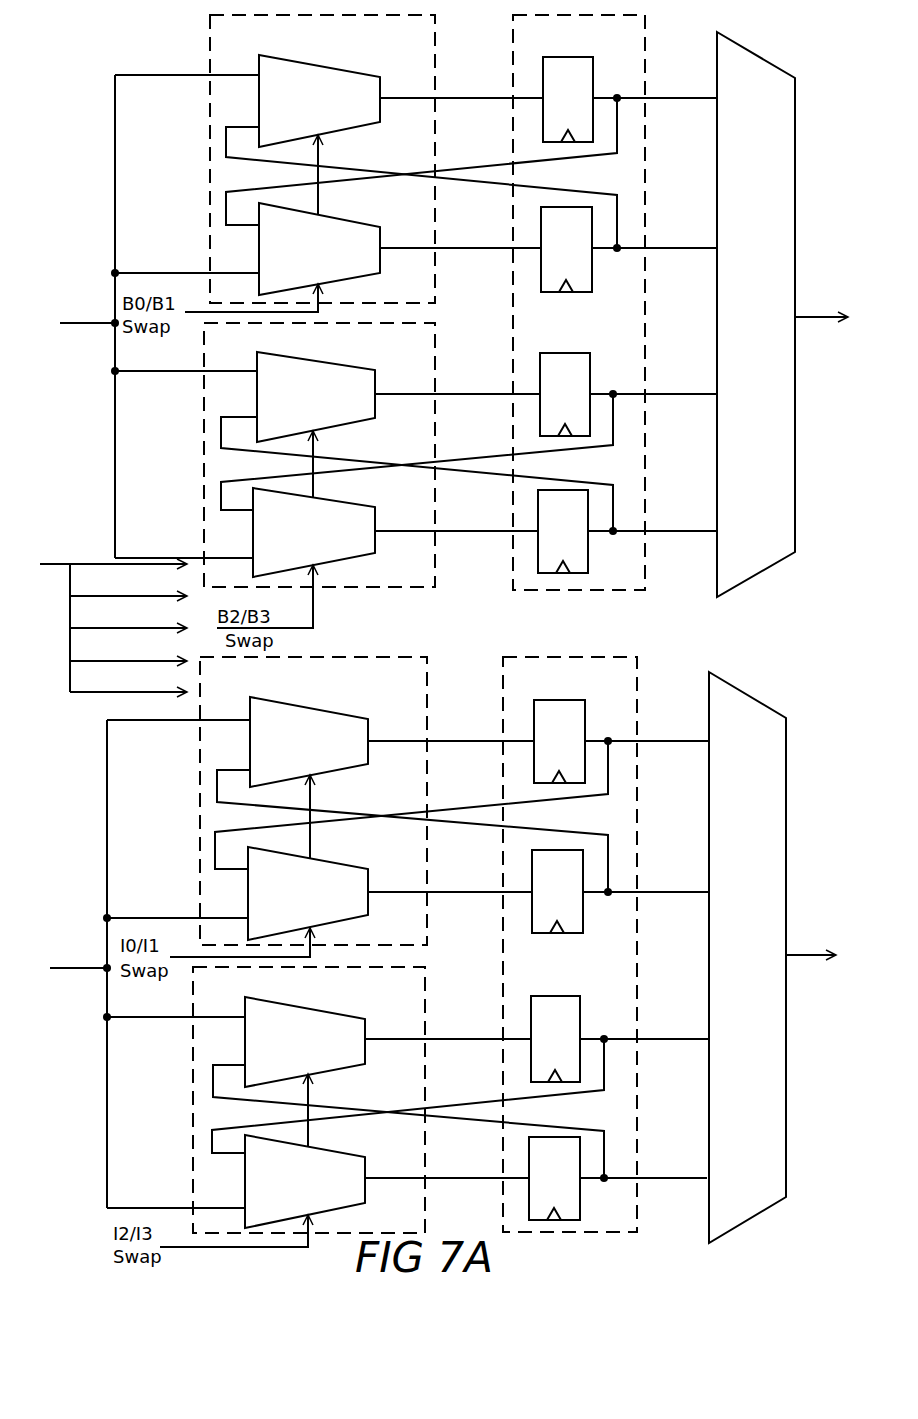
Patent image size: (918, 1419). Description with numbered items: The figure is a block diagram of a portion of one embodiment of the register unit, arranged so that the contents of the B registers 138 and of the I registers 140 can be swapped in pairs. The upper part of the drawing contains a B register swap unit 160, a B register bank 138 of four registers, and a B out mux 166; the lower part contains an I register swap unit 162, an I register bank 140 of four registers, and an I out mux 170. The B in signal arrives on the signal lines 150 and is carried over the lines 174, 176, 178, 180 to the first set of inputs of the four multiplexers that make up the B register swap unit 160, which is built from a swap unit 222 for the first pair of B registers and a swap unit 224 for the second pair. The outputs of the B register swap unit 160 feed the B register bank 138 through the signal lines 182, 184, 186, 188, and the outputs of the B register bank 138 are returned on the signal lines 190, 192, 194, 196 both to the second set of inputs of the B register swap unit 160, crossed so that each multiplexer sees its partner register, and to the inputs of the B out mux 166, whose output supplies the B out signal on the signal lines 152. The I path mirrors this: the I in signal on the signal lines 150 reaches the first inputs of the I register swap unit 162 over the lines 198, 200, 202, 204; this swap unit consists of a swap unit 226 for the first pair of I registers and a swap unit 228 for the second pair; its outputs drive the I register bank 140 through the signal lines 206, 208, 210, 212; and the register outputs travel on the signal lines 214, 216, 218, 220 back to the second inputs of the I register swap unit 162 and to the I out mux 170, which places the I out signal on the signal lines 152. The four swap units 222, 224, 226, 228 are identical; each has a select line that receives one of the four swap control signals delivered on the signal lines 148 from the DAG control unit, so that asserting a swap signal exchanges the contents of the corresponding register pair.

The B register bank 138 is at (590, 343).
The I register bank 140 is at (582, 980).
The signal lines 148 is at (68, 513).
The signal lines 150 is at (78, 326).
The signal lines 152 is at (813, 320).
The B register swap unit 160 is at (437, 300).
The I register swap unit 162 is at (429, 944).
The B out mux 166 is at (757, 50).
The I out mux 170 is at (748, 690).
The mux0 in0 input line 174 is at (180, 75).
The mux1 in0 input line 176 is at (156, 272).
The mux2 in0 input line 178 is at (163, 374).
The mux3 in0 input line 180 is at (155, 557).
The signal line 182 is at (463, 97).
The signal line 184 is at (463, 247).
The signal line 186 is at (477, 393).
The signal line 188 is at (475, 530).
The signal line 190 is at (630, 101).
The signal line 192 is at (625, 251).
The signal line 194 is at (625, 397).
The signal line 196 is at (625, 534).
The I mux in0 input line 198 is at (140, 719).
The I mux in0 input line 200 is at (146, 917).
The I mux in0 input line 202 is at (150, 1020).
The I mux in0 input line 204 is at (146, 1207).
The signal line 206 is at (455, 740).
The signal line 208 is at (455, 891).
The signal line 210 is at (467, 1038).
The signal line 212 is at (465, 1177).
The signal line 214 is at (622, 744).
The signal line 216 is at (617, 895).
The signal line 218 is at (617, 1042).
The signal line 220 is at (613, 1181).
The B0/B1 swap unit 222 is at (205, 167).
The B2/B3 swap unit 224 is at (202, 495).
The I0/I1 swap unit 226 is at (193, 812).
The I2/I3 swap unit 228 is at (190, 1150).